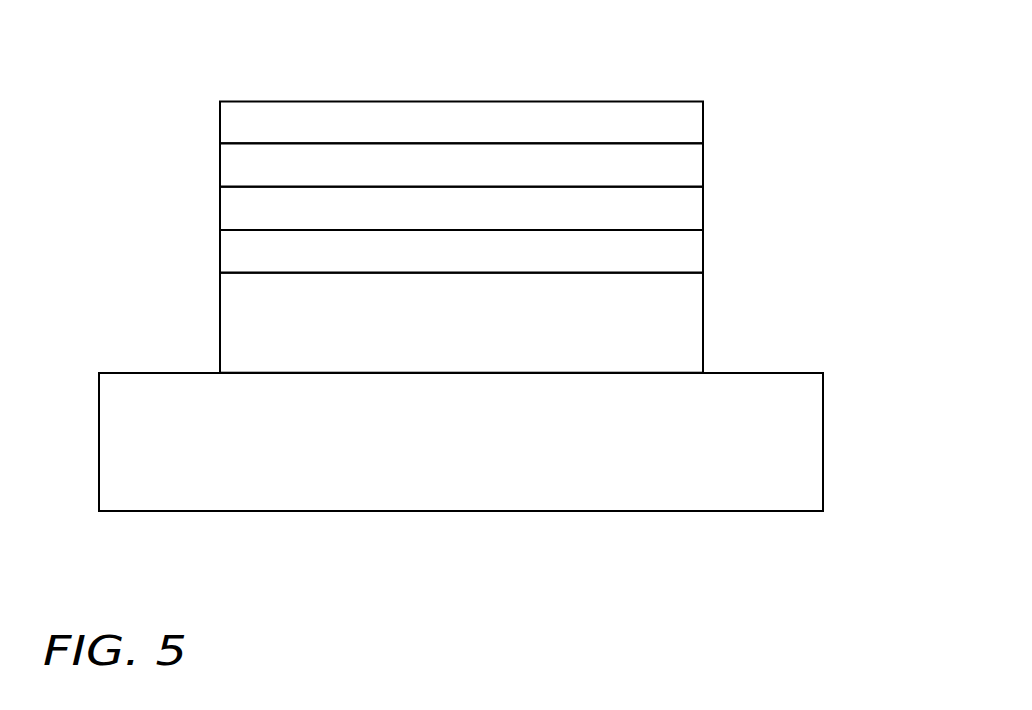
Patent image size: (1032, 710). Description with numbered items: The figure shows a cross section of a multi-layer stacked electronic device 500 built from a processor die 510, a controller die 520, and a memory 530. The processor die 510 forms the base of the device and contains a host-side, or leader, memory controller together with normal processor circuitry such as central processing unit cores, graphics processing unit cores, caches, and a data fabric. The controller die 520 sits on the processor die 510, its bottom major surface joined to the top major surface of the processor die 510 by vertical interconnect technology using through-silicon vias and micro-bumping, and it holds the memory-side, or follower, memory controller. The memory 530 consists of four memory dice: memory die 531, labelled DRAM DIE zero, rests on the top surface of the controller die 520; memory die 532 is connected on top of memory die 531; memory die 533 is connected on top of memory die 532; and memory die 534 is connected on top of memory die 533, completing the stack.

The electronic device 500 is at (146, 66).
The processor die 510 is at (98, 441).
The controller die 520 is at (219, 331).
The memory 530 is at (852, 124).
The memory die 531 is at (704, 253).
The memory die 532 is at (704, 208).
The memory die 533 is at (704, 165).
The memory die 534 is at (704, 123).